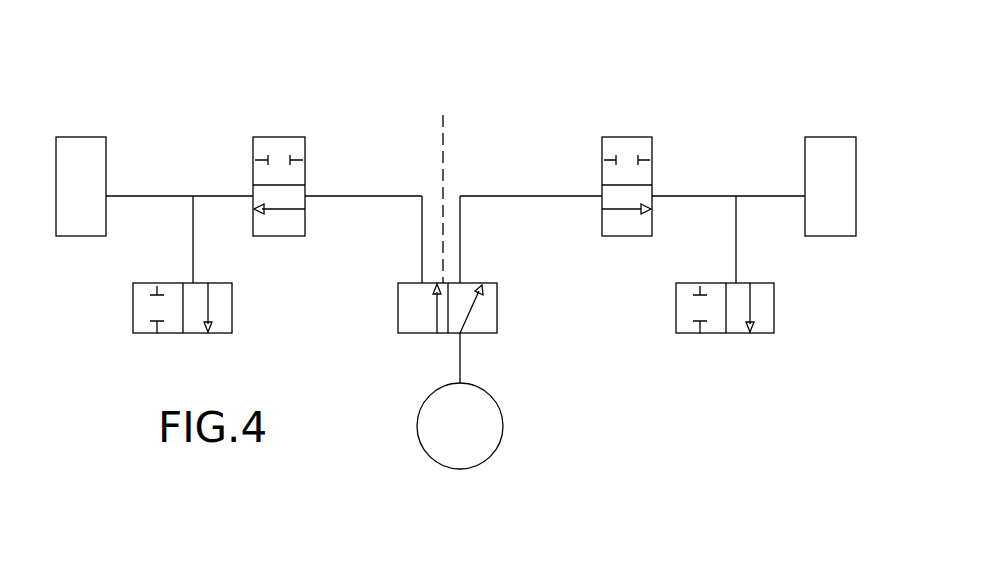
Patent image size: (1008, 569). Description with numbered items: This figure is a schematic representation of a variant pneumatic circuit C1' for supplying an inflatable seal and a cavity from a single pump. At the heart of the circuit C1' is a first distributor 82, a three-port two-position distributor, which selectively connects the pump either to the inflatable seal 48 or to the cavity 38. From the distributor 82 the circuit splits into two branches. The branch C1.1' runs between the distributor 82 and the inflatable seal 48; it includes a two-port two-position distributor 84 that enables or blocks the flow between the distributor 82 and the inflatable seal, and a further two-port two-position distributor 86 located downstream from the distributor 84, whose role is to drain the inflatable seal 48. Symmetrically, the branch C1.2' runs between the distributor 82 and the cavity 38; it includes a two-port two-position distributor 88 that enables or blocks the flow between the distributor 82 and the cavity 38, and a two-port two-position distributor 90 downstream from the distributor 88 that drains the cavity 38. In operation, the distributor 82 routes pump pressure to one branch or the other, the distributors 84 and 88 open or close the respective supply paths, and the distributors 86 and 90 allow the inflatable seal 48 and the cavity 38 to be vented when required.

The cavity 38 is at (848, 154).
The inflatable seal 48 is at (98, 150).
The first distributor 3/2 82 is at (490, 315).
The distributor 2/2 84 is at (298, 150).
The distributor 2/2 86 is at (140, 306).
The distributor 2/2 88 is at (647, 150).
The distributor 2/2 90 is at (766, 309).
The circuit C1' is at (487, 261).
The branch C1.1' is at (234, 295).
The branch C1.2' is at (693, 268).